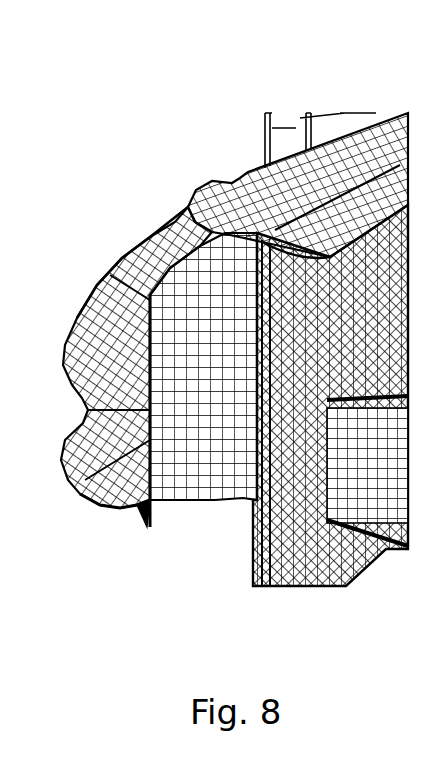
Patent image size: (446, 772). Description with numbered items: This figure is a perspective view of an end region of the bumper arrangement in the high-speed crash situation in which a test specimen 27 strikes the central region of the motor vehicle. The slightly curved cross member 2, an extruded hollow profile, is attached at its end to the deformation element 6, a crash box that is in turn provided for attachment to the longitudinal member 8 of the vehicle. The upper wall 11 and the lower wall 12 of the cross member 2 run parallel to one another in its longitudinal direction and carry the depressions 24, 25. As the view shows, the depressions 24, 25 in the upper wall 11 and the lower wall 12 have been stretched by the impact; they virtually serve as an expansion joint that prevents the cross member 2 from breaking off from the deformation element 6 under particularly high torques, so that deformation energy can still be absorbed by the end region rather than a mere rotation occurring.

The cross member 2 is at (247, 172).
The test specimen 27 is at (283, 130).
The upper wall 11 is at (83, 308).
The depression 24 is at (122, 268).
The lower wall 12 is at (77, 493).
The depression 25 is at (100, 496).
The deformation element 6 is at (203, 500).
The longitudinal member 8 is at (387, 548).